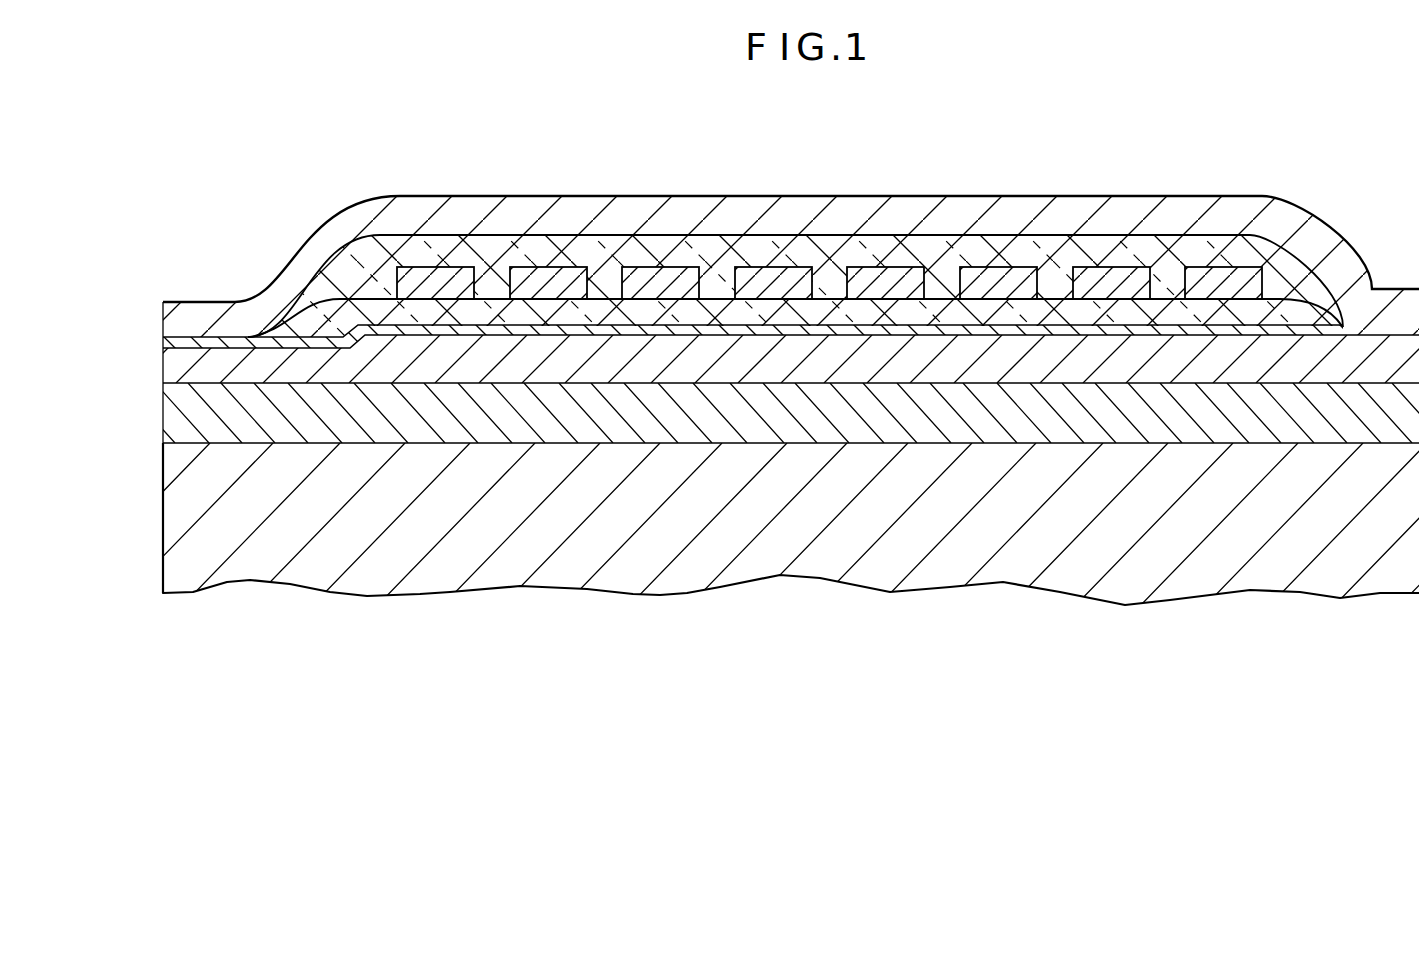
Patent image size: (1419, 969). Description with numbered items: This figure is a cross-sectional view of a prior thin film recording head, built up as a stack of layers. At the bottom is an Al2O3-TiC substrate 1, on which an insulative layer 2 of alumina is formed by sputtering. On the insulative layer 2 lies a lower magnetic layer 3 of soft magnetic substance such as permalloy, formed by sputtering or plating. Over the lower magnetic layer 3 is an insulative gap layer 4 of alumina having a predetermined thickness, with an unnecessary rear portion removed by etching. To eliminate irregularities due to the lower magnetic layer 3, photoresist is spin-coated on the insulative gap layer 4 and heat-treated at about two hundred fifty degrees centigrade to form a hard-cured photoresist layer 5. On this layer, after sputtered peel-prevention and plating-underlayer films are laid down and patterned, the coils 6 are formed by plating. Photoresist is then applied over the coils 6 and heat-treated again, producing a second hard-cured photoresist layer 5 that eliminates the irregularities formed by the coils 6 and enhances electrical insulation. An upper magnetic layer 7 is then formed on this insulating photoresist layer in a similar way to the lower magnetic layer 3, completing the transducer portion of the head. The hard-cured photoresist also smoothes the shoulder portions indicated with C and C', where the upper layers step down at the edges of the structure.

The substrate 1 is at (717, 570).
The insulative layer 2 is at (823, 430).
The lower magnetic layer 3 is at (1053, 348).
The insulative gap layer 4 is at (831, 328).
The hard-cured photoresist layer 5 is at (604, 245).
The coils 6 is at (750, 274).
The upper magnetic layer 7 is at (475, 207).
The shoulder portion C is at (258, 189).
The shoulder portion C' is at (1345, 154).